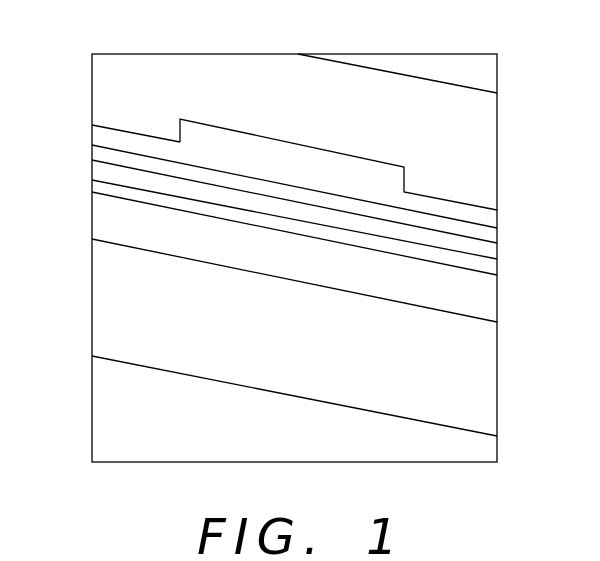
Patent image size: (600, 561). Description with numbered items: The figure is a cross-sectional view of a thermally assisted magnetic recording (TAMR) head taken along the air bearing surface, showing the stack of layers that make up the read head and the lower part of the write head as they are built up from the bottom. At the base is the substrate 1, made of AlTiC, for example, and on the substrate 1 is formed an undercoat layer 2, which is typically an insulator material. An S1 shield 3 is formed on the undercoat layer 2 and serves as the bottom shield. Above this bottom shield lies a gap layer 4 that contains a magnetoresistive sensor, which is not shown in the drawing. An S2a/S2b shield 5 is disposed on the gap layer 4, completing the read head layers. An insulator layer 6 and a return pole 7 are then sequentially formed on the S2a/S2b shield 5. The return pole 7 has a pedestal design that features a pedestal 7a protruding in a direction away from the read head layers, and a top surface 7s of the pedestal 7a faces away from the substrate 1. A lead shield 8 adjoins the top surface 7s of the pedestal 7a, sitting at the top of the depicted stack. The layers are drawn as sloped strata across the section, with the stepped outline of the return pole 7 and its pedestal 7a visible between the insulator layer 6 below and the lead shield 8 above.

The substrate 1 is at (462, 450).
The undercoat layer 2 is at (117, 298).
The S1 shield 3 is at (470, 295).
The gap layer 4 is at (108, 192).
The S2a/S2b shield 5 is at (470, 250).
The insulator layer 6 is at (108, 157).
The return pole 7 is at (470, 218).
The pedestal 7a is at (195, 136).
The top surface of the pedestal 7s is at (226, 128).
The lead shield 8 is at (477, 125).